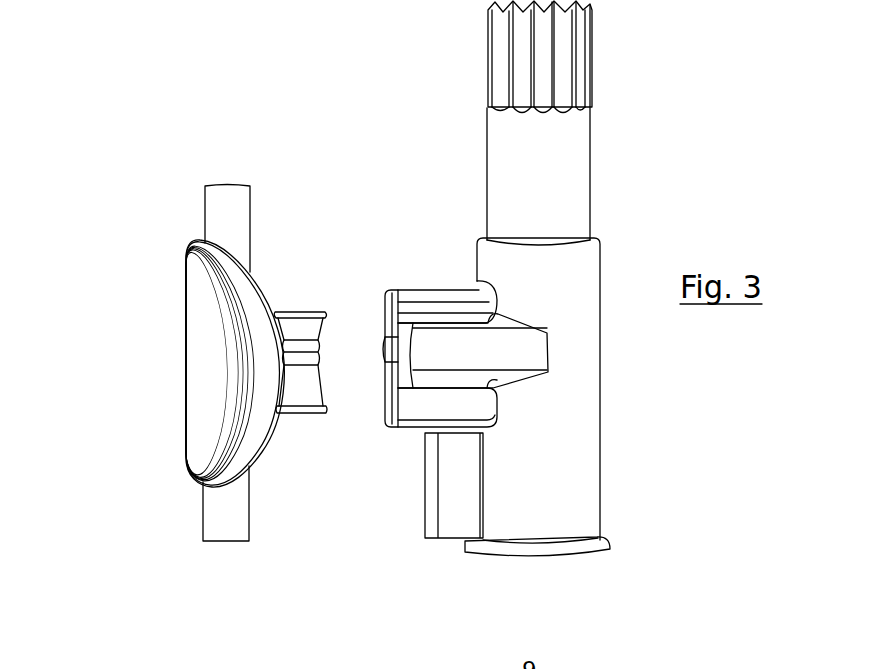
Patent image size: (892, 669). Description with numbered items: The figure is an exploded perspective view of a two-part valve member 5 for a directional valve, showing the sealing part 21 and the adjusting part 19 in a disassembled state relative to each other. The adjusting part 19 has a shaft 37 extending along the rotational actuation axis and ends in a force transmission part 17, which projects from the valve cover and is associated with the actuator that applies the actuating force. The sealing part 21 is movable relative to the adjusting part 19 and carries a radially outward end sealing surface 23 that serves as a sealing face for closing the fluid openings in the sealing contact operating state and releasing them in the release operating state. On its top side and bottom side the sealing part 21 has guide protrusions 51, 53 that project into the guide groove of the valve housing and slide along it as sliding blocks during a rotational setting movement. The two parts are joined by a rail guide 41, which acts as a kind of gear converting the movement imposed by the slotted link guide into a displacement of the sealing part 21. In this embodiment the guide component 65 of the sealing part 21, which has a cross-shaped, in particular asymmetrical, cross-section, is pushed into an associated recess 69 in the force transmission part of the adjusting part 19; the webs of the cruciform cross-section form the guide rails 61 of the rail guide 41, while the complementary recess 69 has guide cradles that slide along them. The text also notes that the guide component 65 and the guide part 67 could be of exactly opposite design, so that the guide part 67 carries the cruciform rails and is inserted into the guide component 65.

The valve member 5 is at (733, 88).
The force transmission part 17 is at (588, 55).
The adjusting part 19 is at (600, 388).
The sealing part 21 is at (189, 512).
The end sealing surface 23 is at (185, 326).
The shaft 37 is at (592, 172).
The rail guide 41 is at (347, 256).
The guide protrusion 51 is at (220, 208).
The guide protrusion 53 is at (225, 538).
The guide rails 61 is at (342, 372).
The guide component 65 is at (296, 311).
The guide part 67 is at (432, 303).
The recess 69 is at (392, 348).